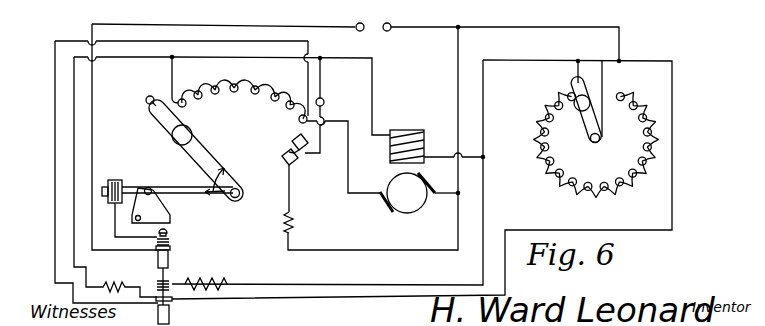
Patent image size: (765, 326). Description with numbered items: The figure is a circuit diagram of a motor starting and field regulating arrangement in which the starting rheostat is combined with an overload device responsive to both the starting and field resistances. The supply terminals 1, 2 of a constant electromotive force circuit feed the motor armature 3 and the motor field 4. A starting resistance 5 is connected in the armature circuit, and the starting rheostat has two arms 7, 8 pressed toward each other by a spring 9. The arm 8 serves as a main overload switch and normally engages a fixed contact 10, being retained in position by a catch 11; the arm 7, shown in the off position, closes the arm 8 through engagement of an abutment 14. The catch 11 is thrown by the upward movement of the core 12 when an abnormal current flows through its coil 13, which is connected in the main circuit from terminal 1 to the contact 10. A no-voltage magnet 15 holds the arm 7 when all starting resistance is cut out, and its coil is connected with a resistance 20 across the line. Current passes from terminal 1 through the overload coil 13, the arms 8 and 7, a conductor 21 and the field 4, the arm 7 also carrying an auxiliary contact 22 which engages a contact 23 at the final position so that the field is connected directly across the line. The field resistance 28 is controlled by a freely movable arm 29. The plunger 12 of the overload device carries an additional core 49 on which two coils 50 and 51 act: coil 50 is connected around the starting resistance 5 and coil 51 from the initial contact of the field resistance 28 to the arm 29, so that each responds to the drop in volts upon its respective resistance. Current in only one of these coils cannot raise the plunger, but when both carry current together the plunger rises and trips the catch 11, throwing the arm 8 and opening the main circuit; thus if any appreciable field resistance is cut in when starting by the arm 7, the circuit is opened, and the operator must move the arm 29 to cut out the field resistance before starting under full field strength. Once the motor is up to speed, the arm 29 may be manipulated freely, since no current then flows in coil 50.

The supply terminal 1 is at (228, 16).
The supply terminal 2 is at (500, 31).
The motor armature 3 is at (419, 193).
The motor field 4 is at (397, 128).
The starting resistance 5 is at (242, 101).
The arm 7 is at (200, 152).
The arm 8 is at (163, 186).
The spring 9 is at (220, 206).
The fixed contact 10 is at (113, 180).
The catch 11 is at (146, 210).
The core 12 is at (170, 258).
The coil 13 is at (170, 240).
The abutment 14 is at (207, 179).
The no-voltage magnet 15 is at (298, 173).
The resistance 20 is at (301, 222).
The conductor 21 is at (272, 62).
The auxiliary contact 22 is at (146, 101).
The contact 23 is at (327, 100).
The field resistance 28 is at (596, 144).
The arm 29 is at (591, 135).
The additional core 49 is at (170, 314).
The coil 50 is at (173, 300).
The coil 51 is at (157, 283).